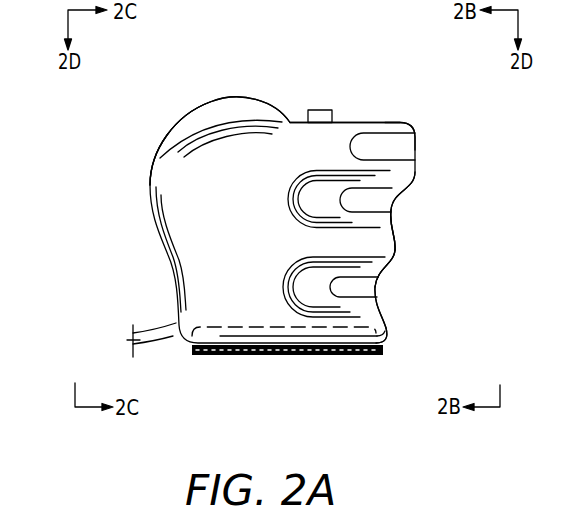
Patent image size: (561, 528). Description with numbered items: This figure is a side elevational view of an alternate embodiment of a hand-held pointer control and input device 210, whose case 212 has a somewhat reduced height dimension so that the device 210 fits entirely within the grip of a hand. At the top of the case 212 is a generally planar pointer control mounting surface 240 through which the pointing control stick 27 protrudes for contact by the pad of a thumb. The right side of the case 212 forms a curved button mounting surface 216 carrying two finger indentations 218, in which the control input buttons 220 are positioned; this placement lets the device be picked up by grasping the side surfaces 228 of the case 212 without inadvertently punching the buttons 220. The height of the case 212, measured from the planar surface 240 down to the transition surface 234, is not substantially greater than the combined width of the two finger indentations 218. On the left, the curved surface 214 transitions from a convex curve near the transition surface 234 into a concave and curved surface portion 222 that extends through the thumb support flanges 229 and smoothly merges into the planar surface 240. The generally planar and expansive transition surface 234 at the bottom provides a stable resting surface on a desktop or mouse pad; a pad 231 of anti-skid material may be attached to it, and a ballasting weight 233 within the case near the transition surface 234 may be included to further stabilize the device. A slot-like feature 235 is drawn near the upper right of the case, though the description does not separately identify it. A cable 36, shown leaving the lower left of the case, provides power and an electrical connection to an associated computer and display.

The hand-held pointer control and input device 210 is at (284, 52).
The case 212 is at (402, 112).
The curved surface 214 is at (171, 298).
The curved button mounting surface 216 is at (400, 253).
The finger indentations 218 is at (422, 190).
The control input buttons 220 is at (378, 199).
The concave and curved surface portion 222 is at (138, 170).
The side surfaces 228 is at (253, 223).
The thumb support flanges 229 is at (220, 110).
The pad 231 is at (287, 358).
The ballasting weight 233 is at (405, 337).
The transition surface 234 is at (315, 367).
The slot 235 is at (407, 147).
The pointer control mounting surface 240 is at (352, 122).
The pointing control stick 27 is at (312, 110).
The cable 36 is at (173, 330).